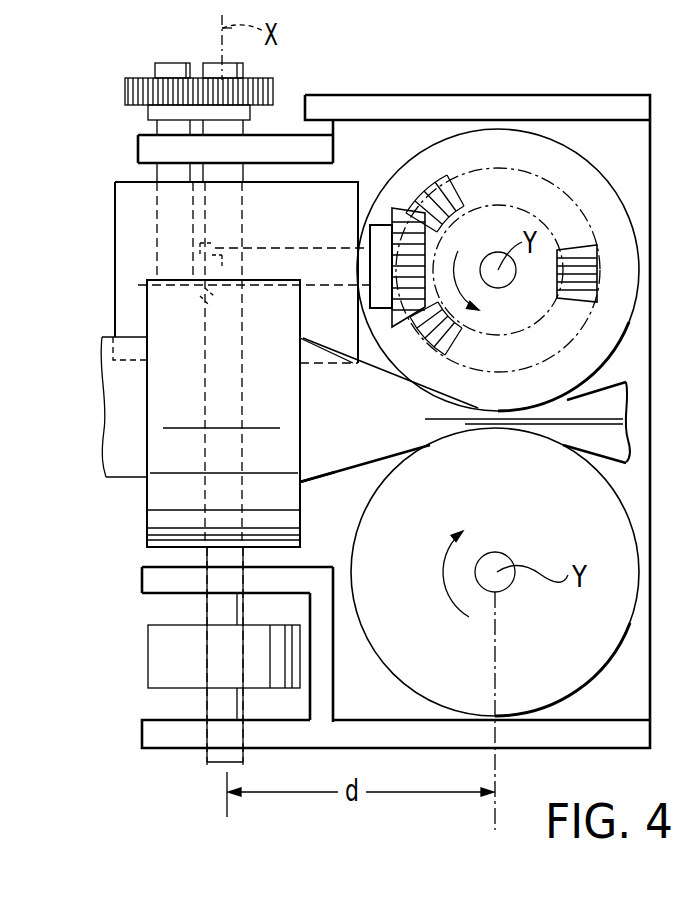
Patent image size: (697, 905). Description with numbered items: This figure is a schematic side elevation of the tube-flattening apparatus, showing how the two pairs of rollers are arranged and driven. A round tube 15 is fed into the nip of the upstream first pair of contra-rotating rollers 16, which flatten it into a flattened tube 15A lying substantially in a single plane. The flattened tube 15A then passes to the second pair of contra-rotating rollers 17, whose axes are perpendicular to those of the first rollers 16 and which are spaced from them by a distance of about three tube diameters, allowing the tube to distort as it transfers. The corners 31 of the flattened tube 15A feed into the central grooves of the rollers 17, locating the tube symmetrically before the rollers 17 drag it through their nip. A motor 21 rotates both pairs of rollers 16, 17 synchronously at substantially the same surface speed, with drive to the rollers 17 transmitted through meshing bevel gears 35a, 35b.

The round tube 15 is at (103, 443).
The flattened tube 15A is at (378, 435).
The first pair of rollers 16 is at (158, 497).
The second pair of rollers 17 is at (462, 150).
The motor 21 is at (318, 232).
The corners of the flattened tube 31 is at (337, 477).
The bevel gear 35a is at (402, 213).
The bevel gear 35b is at (593, 262).